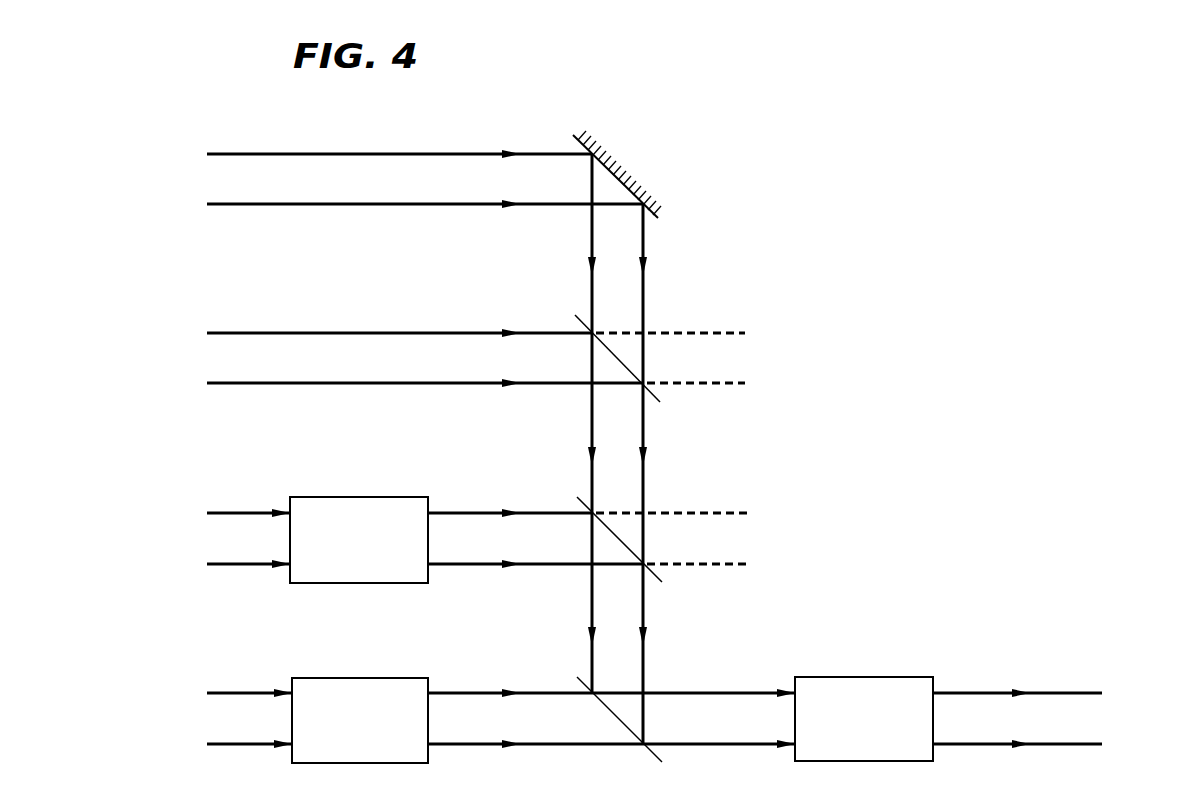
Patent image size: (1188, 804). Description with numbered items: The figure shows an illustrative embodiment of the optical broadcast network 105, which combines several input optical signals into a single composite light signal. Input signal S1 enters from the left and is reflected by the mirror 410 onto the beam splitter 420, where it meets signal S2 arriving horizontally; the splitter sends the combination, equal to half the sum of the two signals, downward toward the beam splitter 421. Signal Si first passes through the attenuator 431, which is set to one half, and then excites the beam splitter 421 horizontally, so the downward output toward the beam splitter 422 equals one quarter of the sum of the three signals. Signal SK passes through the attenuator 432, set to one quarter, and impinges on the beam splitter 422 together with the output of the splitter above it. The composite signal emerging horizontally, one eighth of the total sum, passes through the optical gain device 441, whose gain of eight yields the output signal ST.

The optical broadcast network 105 is at (862, 164).
The mirror 410 is at (672, 219).
The beam splitter 420 is at (579, 318).
The beam splitter 421 is at (580, 500).
The beam splitter 422 is at (580, 681).
The attenuator 431 is at (400, 497).
The attenuator 432 is at (400, 678).
The optical gain device 441 is at (900, 677).